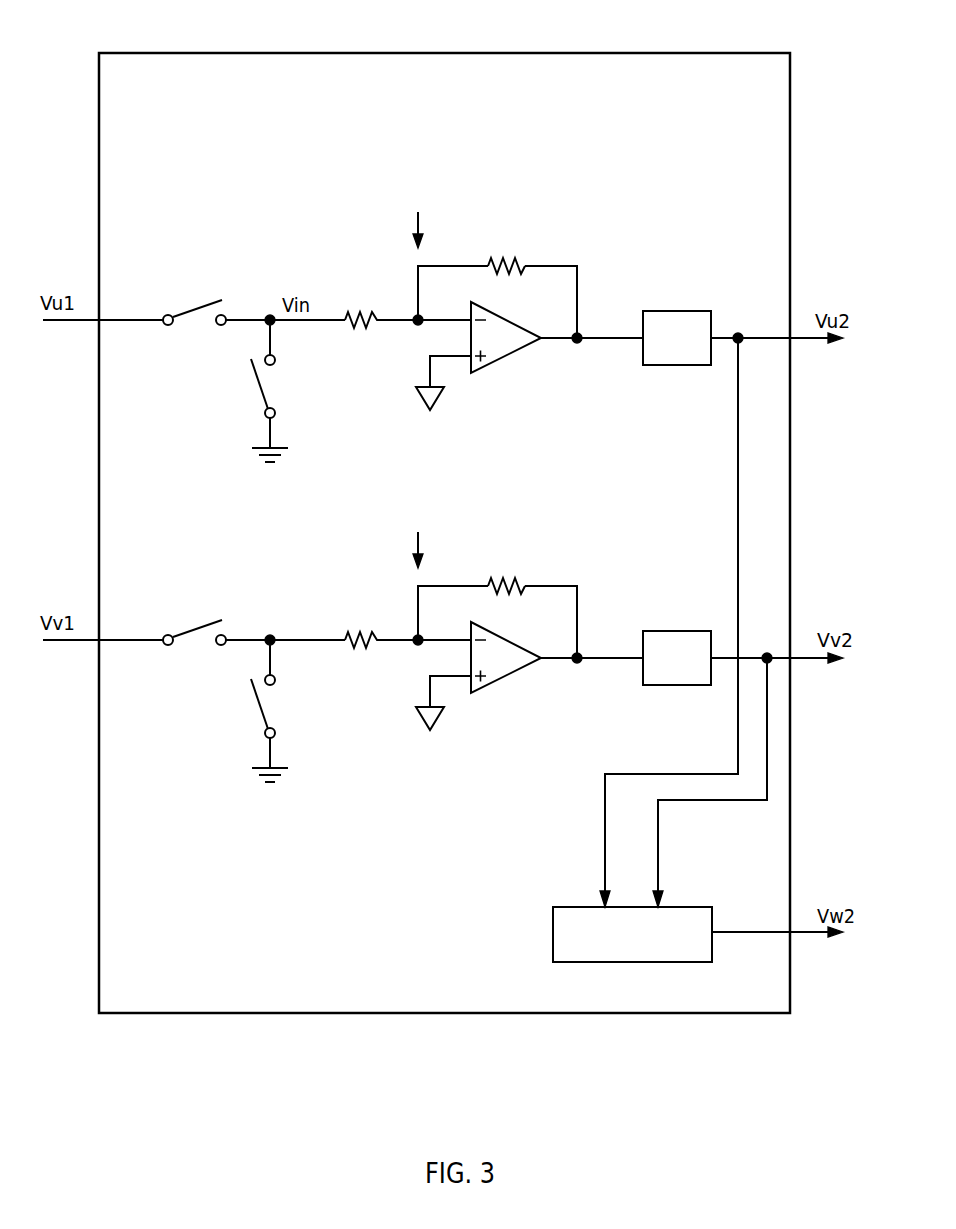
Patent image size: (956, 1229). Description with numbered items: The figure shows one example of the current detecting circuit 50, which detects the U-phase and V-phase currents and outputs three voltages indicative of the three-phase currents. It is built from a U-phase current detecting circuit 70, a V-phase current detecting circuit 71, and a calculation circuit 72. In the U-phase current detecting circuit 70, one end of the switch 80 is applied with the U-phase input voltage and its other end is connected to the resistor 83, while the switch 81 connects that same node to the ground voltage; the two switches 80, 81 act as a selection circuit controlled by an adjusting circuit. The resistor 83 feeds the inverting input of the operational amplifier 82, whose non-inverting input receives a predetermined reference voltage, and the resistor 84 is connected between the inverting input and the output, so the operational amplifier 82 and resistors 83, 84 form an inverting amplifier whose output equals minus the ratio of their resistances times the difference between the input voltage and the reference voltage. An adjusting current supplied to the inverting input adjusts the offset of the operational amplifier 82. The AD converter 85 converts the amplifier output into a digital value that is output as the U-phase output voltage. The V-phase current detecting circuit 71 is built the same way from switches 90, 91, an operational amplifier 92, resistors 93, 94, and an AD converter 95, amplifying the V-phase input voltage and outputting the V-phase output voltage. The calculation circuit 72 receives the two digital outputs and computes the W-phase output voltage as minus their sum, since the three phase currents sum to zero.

The current detecting circuit 50 is at (560, 53).
The U-phase current detecting circuit 70 is at (625, 192).
The V-phase current detecting circuit 71 is at (590, 505).
The calculation circuit 72 is at (702, 907).
The switch 80 is at (222, 300).
The switch 81 is at (250, 388).
The operational amplifier 82 is at (478, 372).
The resistor 83 is at (360, 310).
The resistor 84 is at (515, 263).
The AD converter 85 is at (647, 310).
The switch 90 is at (222, 620).
The switch 91 is at (250, 708).
The operational amplifier 92 is at (478, 692).
The resistor 93 is at (360, 630).
The resistor 94 is at (515, 583).
The AD converter 95 is at (647, 630).